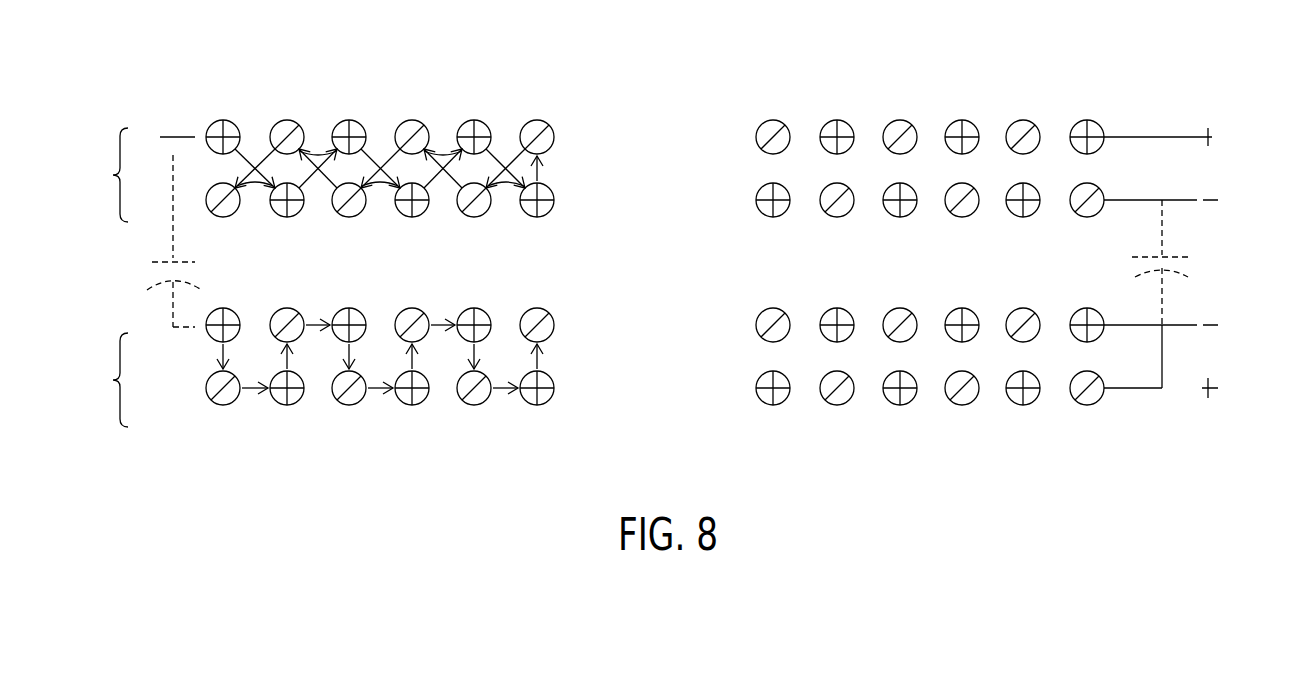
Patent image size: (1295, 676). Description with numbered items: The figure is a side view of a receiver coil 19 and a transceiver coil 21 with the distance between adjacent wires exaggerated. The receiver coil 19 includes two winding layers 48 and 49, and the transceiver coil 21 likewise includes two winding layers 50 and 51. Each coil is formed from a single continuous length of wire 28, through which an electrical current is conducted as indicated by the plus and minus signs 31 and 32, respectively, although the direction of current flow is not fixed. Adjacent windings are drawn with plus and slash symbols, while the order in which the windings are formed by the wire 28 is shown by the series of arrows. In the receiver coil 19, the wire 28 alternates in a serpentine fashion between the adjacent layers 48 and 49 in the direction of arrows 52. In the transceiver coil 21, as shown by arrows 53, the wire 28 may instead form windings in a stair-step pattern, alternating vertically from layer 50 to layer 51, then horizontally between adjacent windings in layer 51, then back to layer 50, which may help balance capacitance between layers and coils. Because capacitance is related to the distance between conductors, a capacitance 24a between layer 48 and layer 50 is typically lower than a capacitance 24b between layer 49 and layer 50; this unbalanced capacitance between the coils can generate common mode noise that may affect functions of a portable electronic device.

The receiver coil 19 is at (106, 175).
The transceiver coil 21 is at (106, 380).
The capacitance between coil layer 48 and layer 50 24a is at (138, 274).
The capacitance between coil layer 49 and layer 50 24b is at (1200, 264).
The wire 28 is at (349, 122).
The + sign 31 is at (1213, 133).
The − sign 32 is at (1213, 199).
The winding layer 48 is at (573, 126).
The winding layer 49 is at (573, 199).
The winding layer 50 is at (573, 320).
The winding layer 51 is at (573, 385).
The arrows 52 is at (505, 127).
The arrows 53 is at (212, 355).